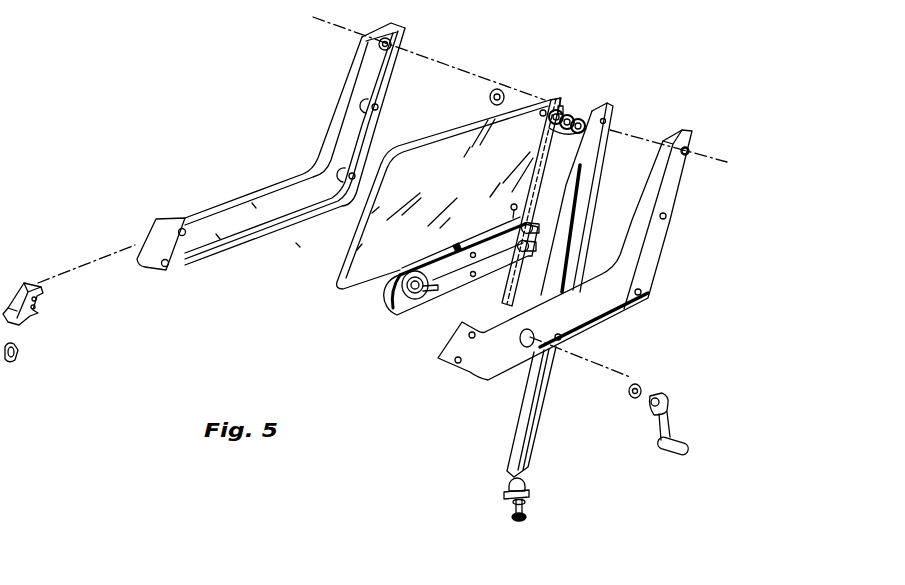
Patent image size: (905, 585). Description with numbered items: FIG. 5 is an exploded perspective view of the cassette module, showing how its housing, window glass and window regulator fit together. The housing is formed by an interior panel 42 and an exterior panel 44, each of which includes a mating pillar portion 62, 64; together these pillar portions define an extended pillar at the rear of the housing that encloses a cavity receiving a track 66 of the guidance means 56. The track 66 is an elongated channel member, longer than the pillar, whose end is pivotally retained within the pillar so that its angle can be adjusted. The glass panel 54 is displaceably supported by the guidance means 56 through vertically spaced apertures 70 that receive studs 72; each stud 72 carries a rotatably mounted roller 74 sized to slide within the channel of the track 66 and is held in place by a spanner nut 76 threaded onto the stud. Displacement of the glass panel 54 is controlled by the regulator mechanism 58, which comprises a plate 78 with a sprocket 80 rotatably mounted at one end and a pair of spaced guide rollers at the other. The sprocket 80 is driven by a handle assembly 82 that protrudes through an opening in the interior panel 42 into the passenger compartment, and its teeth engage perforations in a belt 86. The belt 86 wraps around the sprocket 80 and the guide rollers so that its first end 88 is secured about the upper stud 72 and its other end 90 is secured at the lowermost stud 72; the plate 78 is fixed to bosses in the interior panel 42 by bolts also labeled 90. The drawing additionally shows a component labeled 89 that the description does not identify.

The interior panel 42 is at (652, 290).
The exterior panel 44 is at (255, 192).
The glass panel 54 is at (522, 116).
The guidance means 56 is at (614, 100).
The regulator mechanism 58 is at (380, 297).
The pillar portion 62 is at (684, 161).
The pillar portion 64 is at (352, 78).
The track 66 is at (530, 422).
The apertures 70 is at (545, 105).
The studs 72 is at (561, 98).
The rollers 74 is at (583, 116).
The spanner nut 76 is at (497, 87).
The plate 78 is at (462, 287).
The sprocket 80 is at (404, 303).
The handle assembly 82 is at (664, 394).
The belt 86 is at (437, 291).
The first end 88 is at (612, 130).
The guide lip 89 is at (575, 328).
The other end 90 is at (455, 247).